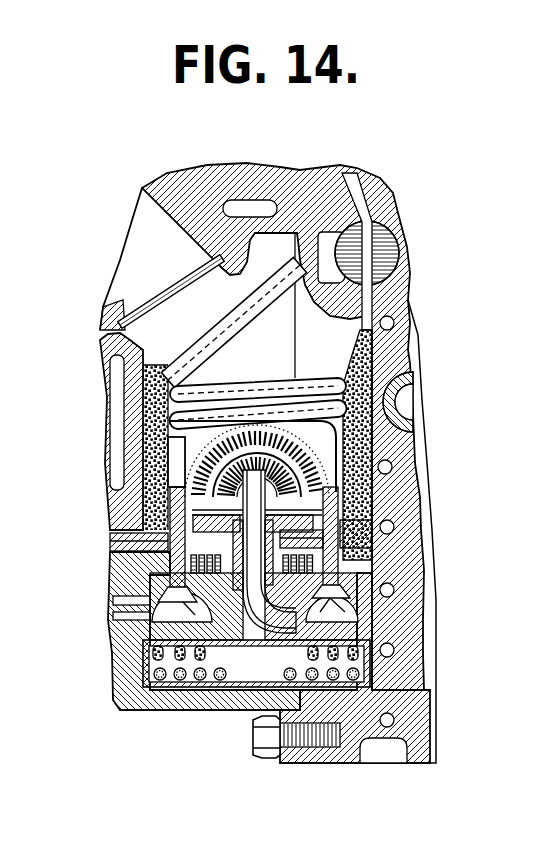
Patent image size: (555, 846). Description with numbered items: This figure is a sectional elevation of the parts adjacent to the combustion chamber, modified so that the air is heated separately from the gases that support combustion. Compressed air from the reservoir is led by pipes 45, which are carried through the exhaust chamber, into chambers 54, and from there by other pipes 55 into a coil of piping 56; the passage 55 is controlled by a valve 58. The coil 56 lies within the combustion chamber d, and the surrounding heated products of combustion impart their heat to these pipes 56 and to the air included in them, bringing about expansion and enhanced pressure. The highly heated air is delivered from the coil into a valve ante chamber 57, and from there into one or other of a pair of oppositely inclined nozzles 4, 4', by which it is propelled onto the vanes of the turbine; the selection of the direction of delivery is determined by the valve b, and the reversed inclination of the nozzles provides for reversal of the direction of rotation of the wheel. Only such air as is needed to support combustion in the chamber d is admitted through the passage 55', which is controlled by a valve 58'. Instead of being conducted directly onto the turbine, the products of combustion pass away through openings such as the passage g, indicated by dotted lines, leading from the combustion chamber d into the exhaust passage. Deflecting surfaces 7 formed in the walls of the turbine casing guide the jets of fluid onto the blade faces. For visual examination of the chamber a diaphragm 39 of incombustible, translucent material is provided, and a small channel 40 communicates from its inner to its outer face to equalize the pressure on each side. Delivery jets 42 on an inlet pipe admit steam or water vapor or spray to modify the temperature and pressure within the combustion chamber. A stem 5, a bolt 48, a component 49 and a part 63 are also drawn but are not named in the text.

The nozzle 4 is at (286, 426).
The nozzle 4' is at (362, 523).
The valve stem 5 is at (355, 308).
The deflecting surface 7 is at (125, 660).
The diaphragm 39 is at (172, 294).
The channel 40 is at (143, 600).
The delivery jet 42 is at (118, 348).
The pipe 45 is at (395, 677).
The securing bolt 48 is at (250, 708).
The commutator 49 is at (283, 505).
The chamber 54 is at (150, 600).
The pipe 55 is at (400, 527).
The passage 55' is at (107, 518).
The coil of piping 56 is at (238, 331).
The valve ante chamber 57 is at (327, 250).
The valve 58 is at (380, 549).
The valve 58' is at (109, 550).
The bushing 63 is at (405, 383).
The valve b is at (395, 250).
The combustion chamber d is at (237, 305).
The passage g is at (408, 408).